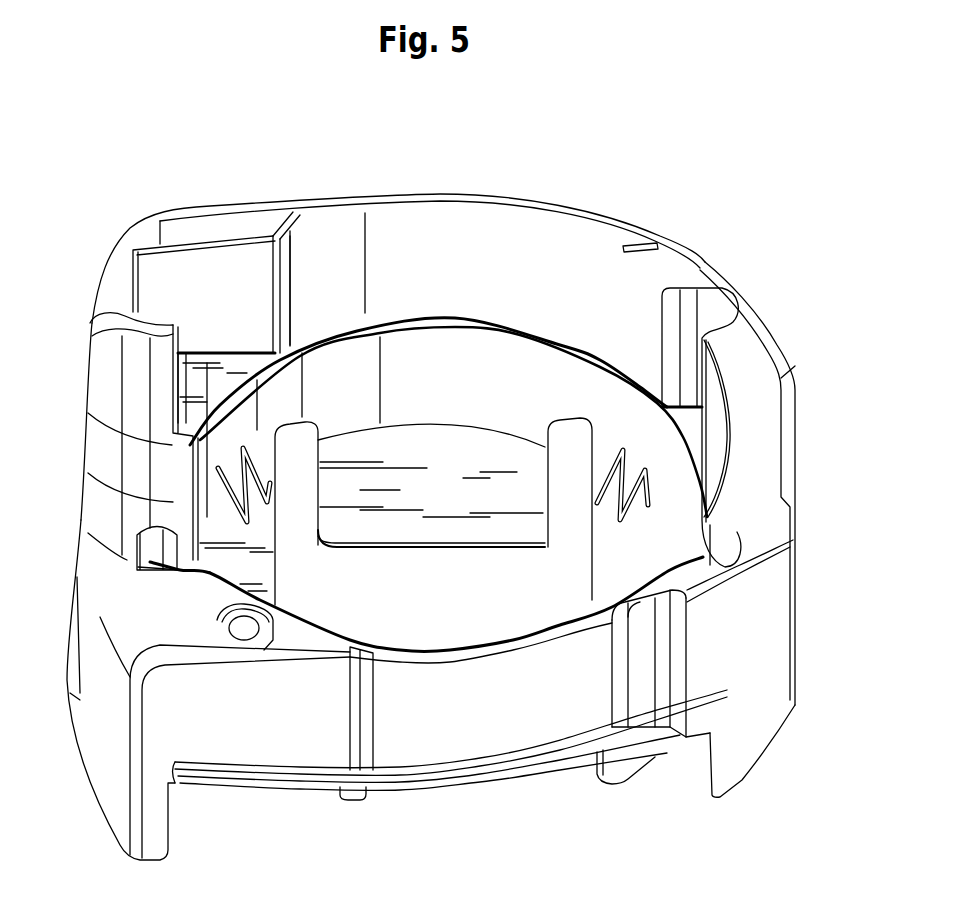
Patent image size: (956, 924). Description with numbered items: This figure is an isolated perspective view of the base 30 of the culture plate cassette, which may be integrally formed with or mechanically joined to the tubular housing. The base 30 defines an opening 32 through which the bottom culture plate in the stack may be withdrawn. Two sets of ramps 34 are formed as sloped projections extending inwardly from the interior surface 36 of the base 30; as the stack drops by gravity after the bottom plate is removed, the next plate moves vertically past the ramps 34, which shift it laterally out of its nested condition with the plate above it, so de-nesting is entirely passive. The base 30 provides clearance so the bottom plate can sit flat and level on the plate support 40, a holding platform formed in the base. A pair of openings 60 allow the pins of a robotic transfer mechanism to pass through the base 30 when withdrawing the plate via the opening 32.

The base 30 is at (665, 266).
The opening 32 is at (229, 830).
The ramps 34 is at (230, 453).
The interior surface 36 is at (463, 350).
The plate support 40 is at (283, 579).
The openings 60 is at (323, 430).